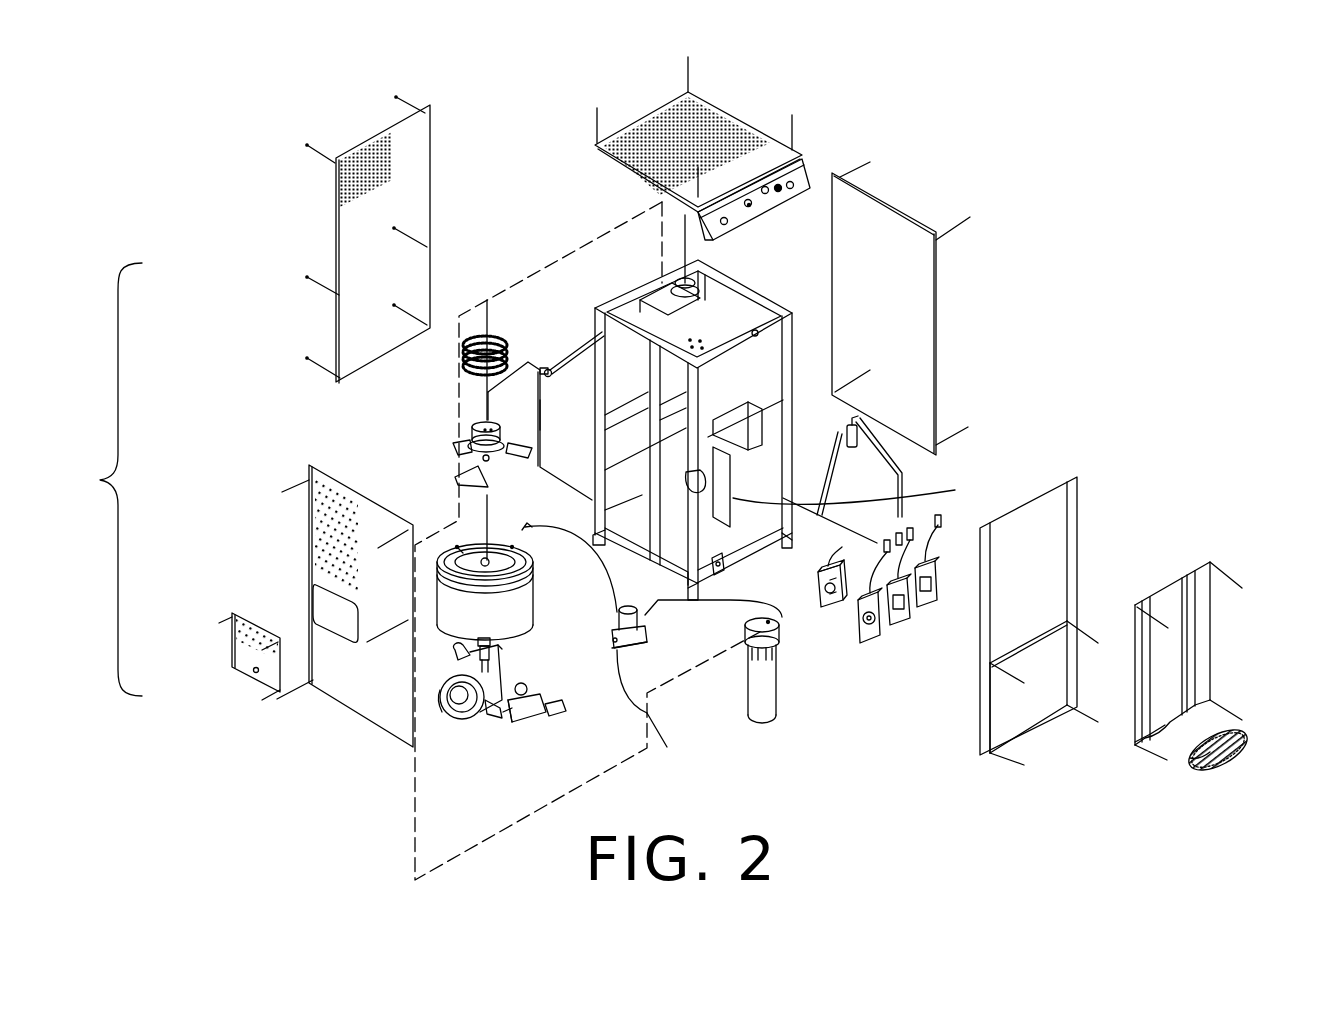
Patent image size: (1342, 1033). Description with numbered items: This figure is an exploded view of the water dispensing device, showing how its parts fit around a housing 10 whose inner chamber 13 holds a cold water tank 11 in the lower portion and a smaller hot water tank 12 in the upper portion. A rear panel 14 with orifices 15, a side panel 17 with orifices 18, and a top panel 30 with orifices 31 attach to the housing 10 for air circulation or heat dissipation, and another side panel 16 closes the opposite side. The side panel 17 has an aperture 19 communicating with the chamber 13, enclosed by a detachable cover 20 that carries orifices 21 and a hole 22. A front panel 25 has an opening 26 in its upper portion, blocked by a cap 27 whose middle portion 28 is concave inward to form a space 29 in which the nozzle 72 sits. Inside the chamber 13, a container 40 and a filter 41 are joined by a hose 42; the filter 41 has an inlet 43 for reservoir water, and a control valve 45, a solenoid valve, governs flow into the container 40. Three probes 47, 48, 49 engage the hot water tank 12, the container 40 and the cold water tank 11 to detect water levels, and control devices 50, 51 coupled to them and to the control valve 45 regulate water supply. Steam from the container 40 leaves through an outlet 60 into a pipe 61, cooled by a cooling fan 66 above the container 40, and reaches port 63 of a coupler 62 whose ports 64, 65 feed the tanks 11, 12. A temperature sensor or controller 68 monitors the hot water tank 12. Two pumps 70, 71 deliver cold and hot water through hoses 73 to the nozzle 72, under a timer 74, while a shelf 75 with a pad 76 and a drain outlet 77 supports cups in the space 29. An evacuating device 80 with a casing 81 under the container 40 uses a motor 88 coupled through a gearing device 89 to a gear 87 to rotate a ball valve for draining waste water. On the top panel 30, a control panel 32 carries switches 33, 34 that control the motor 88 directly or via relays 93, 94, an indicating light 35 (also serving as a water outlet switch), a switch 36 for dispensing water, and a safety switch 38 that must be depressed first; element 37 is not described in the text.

The housing 10 is at (637, 288).
The cold water tank 11 is at (636, 518).
The hot water tank 12 is at (727, 303).
The inner chamber 13 is at (617, 365).
The rear panel 14 is at (440, 187).
The orifices 15 is at (333, 180).
The side panel 16 is at (918, 342).
The side panel 17 is at (307, 623).
The orifices 18 is at (327, 512).
The aperture 19 is at (325, 593).
The cover 20 is at (233, 657).
The orifices 21 is at (242, 632).
The hole 22 is at (252, 672).
The front panel 25 is at (998, 708).
The opening 26 is at (1052, 538).
The cap 27 is at (1207, 678).
The middle portion 28 is at (1187, 637).
The space 29 is at (1170, 722).
The top panel 30 is at (742, 118).
The orifices 31 is at (642, 145).
The control panel 32 is at (802, 157).
The switch 33 is at (792, 190).
The switch 34 is at (724, 225).
The indicating light / switch 35 is at (748, 203).
The switch 36 is at (765, 190).
The indicator light 37 is at (749, 209).
The safety switch 38 is at (778, 192).
The container 40 is at (507, 612).
The filter 41 is at (760, 693).
The hose 42 is at (553, 530).
The inlet 43 is at (745, 640).
The control valve 45 is at (670, 737).
The probe 47 is at (680, 228).
The probe 48 is at (492, 506).
The probe 49 is at (862, 491).
The control device 50 is at (928, 597).
The control device 51 is at (902, 615).
The outlet 60 is at (455, 548).
The pipe 61 is at (460, 372).
The coupler 62 is at (550, 376).
The port 63 is at (548, 370).
The port 64 is at (540, 415).
The port 65 is at (565, 365).
The cooling fan 66 is at (455, 437).
The temperature sensor or controller 68 is at (820, 603).
The pump 70 is at (730, 568).
The pump 71 is at (752, 430).
The nozzle 72 is at (858, 438).
The hoses 73 is at (887, 442).
The timer 74 is at (866, 622).
The shelf 75 is at (1247, 730).
The pad 76 is at (1235, 753).
The outlet 77 is at (1195, 753).
The evacuating device 80 is at (426, 755).
The casing 81 is at (490, 715).
The gear 87 is at (460, 707).
The motor 88 is at (500, 655).
The gearing device 89 is at (437, 683).
The relay 93 is at (520, 712).
The relay 94 is at (498, 740).